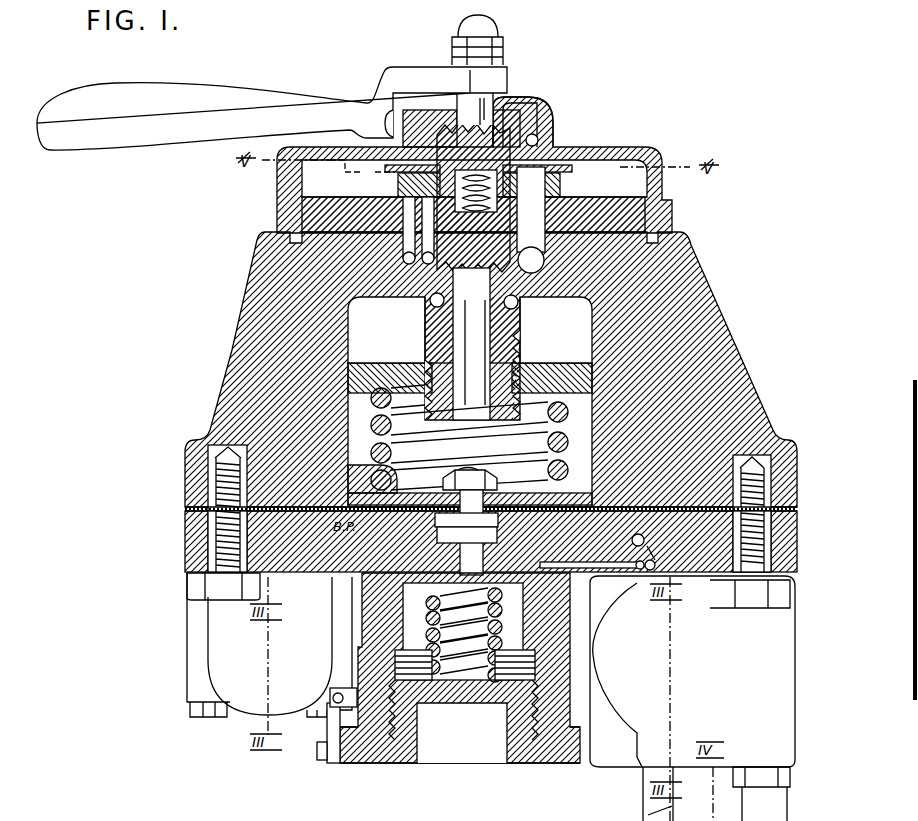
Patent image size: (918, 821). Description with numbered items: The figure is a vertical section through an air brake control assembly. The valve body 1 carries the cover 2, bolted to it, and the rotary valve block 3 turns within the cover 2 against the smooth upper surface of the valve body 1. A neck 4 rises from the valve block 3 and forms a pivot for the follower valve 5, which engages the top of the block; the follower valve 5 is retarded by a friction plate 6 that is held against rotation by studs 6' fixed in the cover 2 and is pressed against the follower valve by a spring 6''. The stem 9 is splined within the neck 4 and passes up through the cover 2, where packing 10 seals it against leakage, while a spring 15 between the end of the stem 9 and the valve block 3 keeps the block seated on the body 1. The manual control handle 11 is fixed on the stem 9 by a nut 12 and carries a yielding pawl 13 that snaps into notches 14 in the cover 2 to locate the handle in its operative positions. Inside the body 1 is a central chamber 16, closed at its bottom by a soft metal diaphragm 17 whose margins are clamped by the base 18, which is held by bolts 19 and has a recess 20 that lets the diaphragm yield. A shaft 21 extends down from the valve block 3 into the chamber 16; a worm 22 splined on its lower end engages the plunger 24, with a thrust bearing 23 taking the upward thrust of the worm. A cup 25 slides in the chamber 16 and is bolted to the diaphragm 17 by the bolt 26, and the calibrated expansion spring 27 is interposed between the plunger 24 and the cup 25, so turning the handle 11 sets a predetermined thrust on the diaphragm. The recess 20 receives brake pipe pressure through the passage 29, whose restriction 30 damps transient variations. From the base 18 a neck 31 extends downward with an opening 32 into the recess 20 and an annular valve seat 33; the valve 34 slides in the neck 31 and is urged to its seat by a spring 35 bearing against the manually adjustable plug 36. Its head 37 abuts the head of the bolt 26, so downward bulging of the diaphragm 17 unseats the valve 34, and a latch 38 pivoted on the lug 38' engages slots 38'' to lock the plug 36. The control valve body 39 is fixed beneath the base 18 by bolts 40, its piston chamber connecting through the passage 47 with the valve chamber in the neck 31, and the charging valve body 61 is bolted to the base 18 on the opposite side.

The valve body 1 is at (248, 330).
The cover 2 is at (663, 180).
The rotary valve block 3 is at (665, 220).
The neck 4 is at (550, 140).
The follower valve 5 is at (398, 187).
The friction plate 6 is at (550, 175).
The studs 6' is at (362, 170).
The spring 6'' is at (556, 112).
The stem 9 is at (482, 110).
The packing 10 is at (522, 130).
The manual control handle 11 is at (300, 96).
The nut 12 is at (503, 45).
The yielding pawl 13 is at (391, 121).
The notches 14 is at (400, 110).
The spring 15 is at (500, 200).
The central chamber 16 is at (590, 323).
The soft metal diaphragm 17 is at (702, 520).
The base 18 is at (265, 540).
The bolts 19 is at (185, 527).
The recess 20 is at (340, 523).
The shaft 21 is at (485, 340).
The worm 22 is at (520, 351).
The thrust bearing 23 is at (422, 306).
The plunger 24 is at (378, 365).
The cup 25 is at (353, 465).
The bolt 26 is at (430, 513).
The expansion spring 27 is at (562, 425).
The passage 29 is at (648, 546).
The restriction 30 is at (634, 536).
The neck 31 is at (568, 606).
The opening 32 is at (492, 540).
The annular valve seat 33 is at (540, 542).
The valve 34 is at (528, 612).
The spring 35 is at (534, 673).
The manually adjustable plug 36 is at (397, 763).
The head 37 is at (447, 535).
The latch 38 is at (314, 733).
The lug 38' is at (324, 689).
The slots 38'' is at (305, 758).
The control valve body 39 is at (637, 760).
The bolts 40 is at (745, 788).
The passage 47 is at (649, 570).
The charging valve body 61 is at (240, 650).